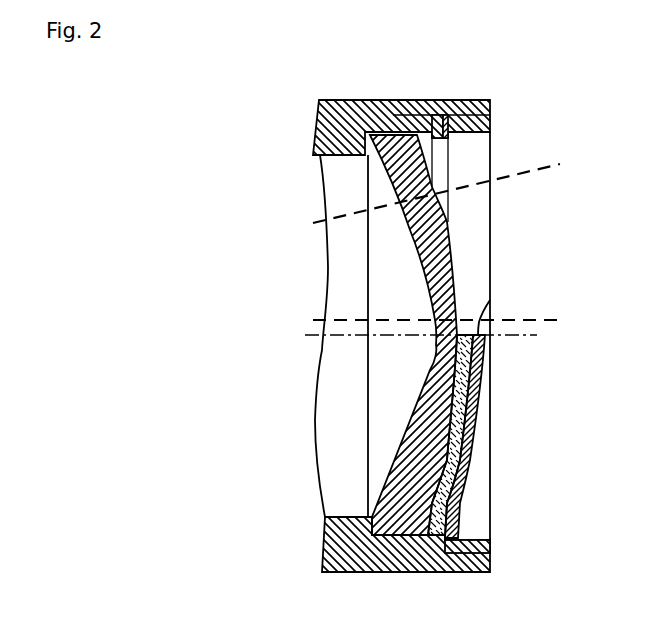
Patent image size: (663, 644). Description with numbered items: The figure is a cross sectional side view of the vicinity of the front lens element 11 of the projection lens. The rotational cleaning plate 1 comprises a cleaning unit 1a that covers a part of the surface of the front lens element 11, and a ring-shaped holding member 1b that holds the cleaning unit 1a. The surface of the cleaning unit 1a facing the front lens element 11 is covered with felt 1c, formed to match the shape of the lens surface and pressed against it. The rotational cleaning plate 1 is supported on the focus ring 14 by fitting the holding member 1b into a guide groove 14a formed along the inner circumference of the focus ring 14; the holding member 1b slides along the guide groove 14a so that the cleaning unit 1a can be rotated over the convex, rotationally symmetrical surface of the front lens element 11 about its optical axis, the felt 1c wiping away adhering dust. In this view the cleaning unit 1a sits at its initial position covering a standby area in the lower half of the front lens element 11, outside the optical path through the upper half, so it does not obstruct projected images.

The rotational cleaning plate 1 is at (490, 300).
The cleaning unit 1a is at (535, 333).
The holding member 1b is at (453, 571).
The felt 1c is at (465, 490).
The front lens element 11 is at (433, 178).
The focus ring 14 is at (405, 100).
The guide groove 14a is at (470, 100).